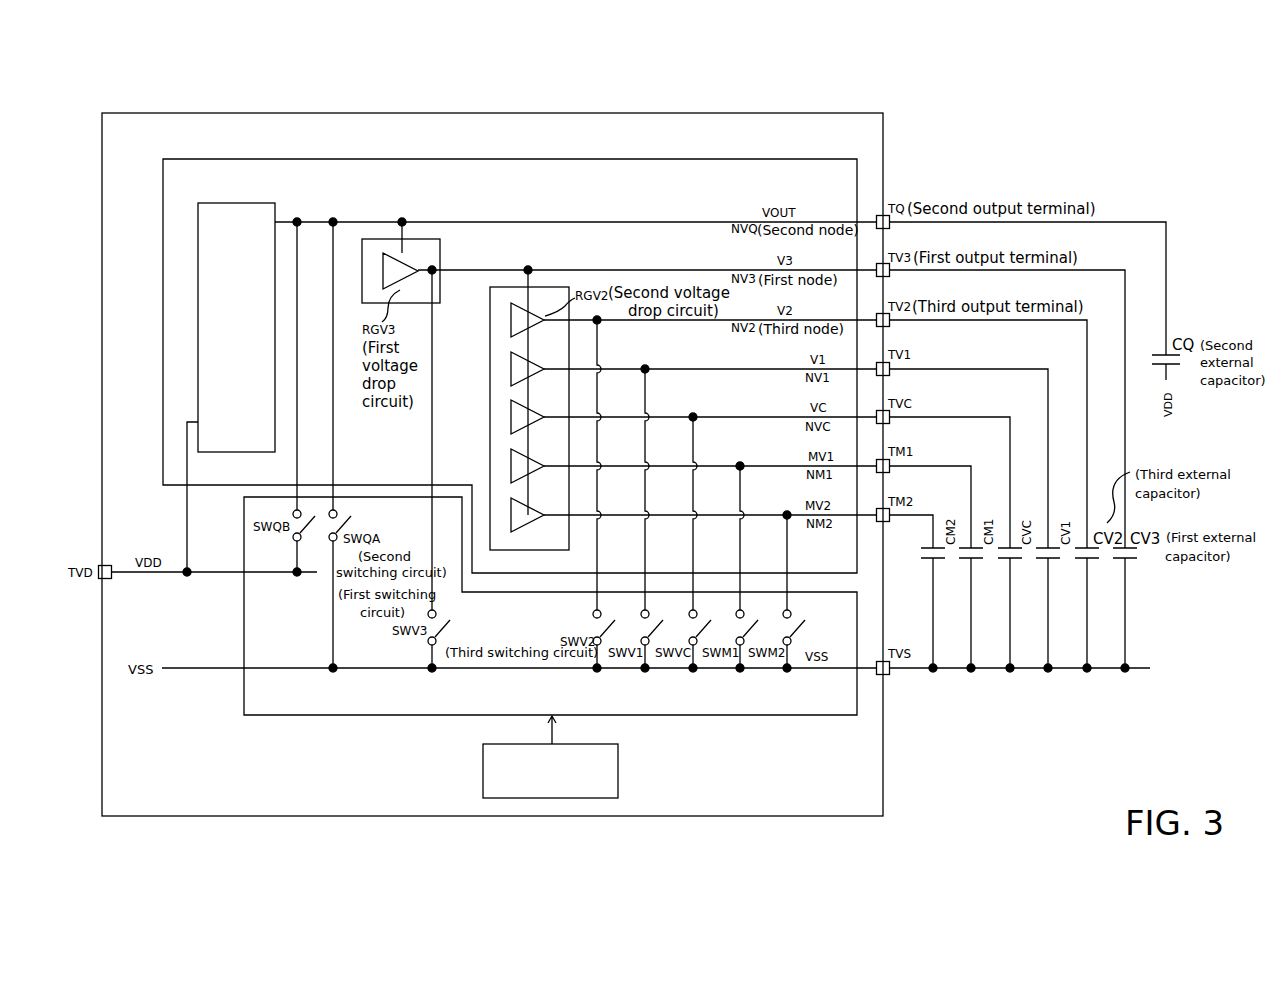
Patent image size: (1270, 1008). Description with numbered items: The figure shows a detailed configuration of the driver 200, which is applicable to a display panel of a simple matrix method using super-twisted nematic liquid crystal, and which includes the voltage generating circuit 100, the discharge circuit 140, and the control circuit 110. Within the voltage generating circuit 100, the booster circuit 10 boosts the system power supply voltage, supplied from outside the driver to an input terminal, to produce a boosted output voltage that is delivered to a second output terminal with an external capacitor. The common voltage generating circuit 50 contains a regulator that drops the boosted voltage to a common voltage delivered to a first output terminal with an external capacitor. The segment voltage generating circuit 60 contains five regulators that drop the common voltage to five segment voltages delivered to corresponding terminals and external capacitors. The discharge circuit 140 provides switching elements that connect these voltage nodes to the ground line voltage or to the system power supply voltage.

The driver 200 is at (150, 112).
The voltage generating circuit 100 is at (786, 158).
The booster circuit 10 is at (235, 202).
The common voltage generating circuit 50 is at (440, 251).
The segment voltage generating circuit 60 is at (547, 286).
The control circuit 110 is at (620, 772).
The discharge circuit 140 is at (758, 718).